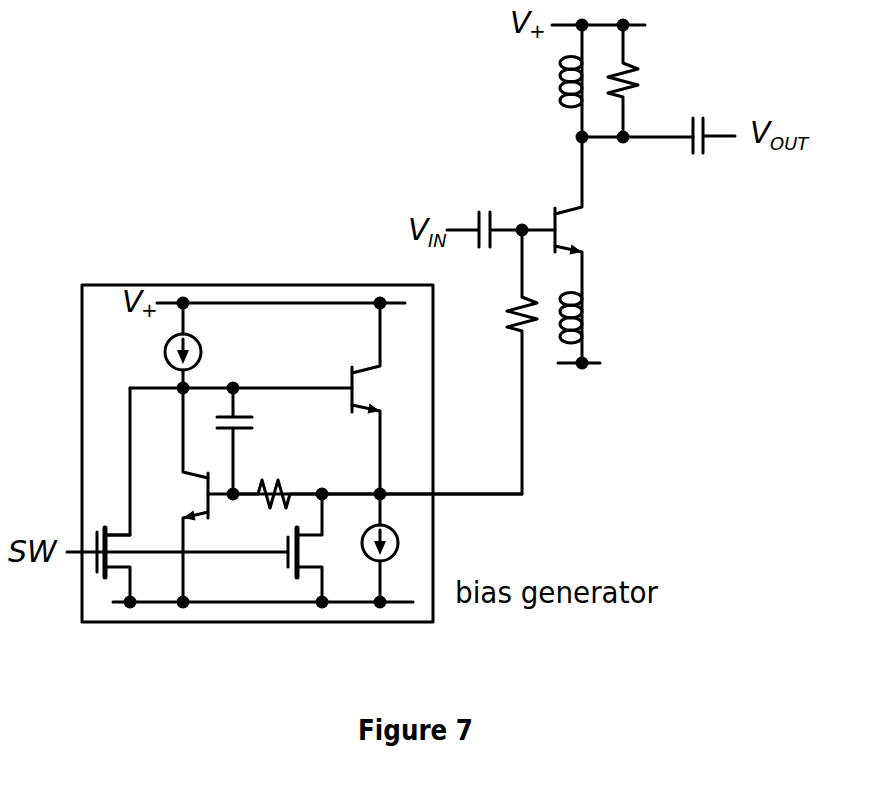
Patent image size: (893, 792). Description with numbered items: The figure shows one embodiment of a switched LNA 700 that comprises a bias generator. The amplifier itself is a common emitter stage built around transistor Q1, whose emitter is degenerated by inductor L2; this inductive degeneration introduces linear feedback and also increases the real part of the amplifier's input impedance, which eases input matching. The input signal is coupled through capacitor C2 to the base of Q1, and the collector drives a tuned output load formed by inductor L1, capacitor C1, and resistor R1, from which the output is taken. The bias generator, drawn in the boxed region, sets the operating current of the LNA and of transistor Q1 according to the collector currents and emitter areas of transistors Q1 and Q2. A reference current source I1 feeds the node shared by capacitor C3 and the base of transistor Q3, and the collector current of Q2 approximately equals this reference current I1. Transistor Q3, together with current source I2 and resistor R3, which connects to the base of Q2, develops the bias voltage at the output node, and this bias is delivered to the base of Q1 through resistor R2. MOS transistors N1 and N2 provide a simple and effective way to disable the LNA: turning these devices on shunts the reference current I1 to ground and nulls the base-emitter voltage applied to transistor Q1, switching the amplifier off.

The switched LNA 700 is at (401, 453).
The tuned output load inductor L1 is at (548, 81).
The tuned output load resistor R1 is at (644, 81).
The tuned output load capacitor C1 is at (700, 153).
The common emitter amplifier transistor Q1 is at (573, 215).
The inductive degeneration inductor L2 is at (592, 328).
The input coupling capacitor C2 is at (484, 208).
The base bias resistor R2 is at (385, 362).
The reference current source I1 is at (199, 345).
The bias generator capacitor C3 is at (256, 441).
The bias generator transistor Q3 is at (388, 414).
The bias reference transistor Q2 is at (187, 495).
The bias generator resistor R3 is at (377, 474).
The MOS disable transistor N2 is at (136, 565).
The MOS disable transistor N1 is at (325, 548).
The bias generator current source I2 is at (394, 553).